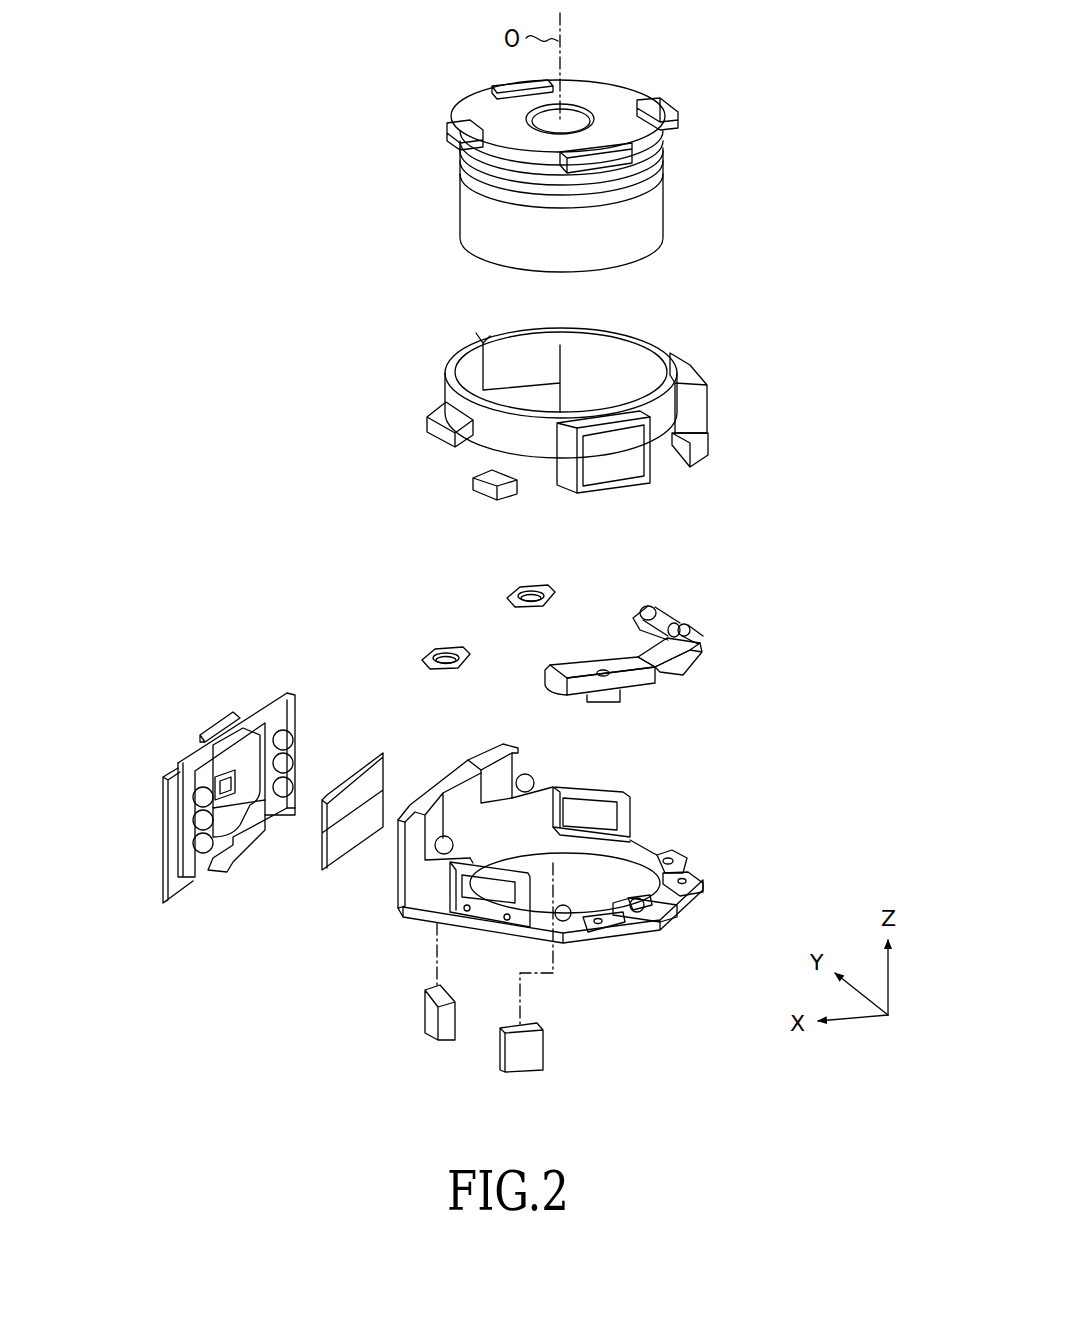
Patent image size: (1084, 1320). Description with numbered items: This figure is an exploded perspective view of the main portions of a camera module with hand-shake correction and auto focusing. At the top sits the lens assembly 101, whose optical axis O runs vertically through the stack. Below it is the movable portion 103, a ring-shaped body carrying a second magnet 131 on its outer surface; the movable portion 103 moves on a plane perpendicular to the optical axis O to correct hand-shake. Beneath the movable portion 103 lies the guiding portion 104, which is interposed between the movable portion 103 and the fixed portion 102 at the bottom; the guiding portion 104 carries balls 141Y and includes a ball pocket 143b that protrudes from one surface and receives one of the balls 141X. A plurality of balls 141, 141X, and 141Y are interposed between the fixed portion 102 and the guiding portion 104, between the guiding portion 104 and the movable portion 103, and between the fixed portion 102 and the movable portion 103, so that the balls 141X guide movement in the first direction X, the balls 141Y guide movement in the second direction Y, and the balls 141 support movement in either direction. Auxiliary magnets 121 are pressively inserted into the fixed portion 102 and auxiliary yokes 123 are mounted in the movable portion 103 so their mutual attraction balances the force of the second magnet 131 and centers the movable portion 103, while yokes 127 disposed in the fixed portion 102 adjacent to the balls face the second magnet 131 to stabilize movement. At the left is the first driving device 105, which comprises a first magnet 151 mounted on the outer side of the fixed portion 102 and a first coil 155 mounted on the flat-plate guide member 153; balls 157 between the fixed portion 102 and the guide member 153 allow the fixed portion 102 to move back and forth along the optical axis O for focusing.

The lens assembly 101 is at (702, 177).
The fixed portion 102 is at (574, 887).
The movable portion 103 is at (724, 352).
The guiding portion 104 is at (668, 625).
The first driving device 105 is at (234, 802).
The auxiliary magnet 121 is at (430, 1020).
The auxiliary yoke 123 is at (506, 597).
The yoke 127 is at (690, 880).
The second magnet 131 is at (585, 473).
The ball 141 is at (531, 781).
The ball 141X is at (670, 855).
The ball 141Y is at (653, 610).
The ball pocket 143b is at (607, 698).
The first magnet 151 is at (340, 857).
The guide member 153 is at (214, 729).
The first coil 155 is at (243, 760).
The ball 157 is at (288, 738).